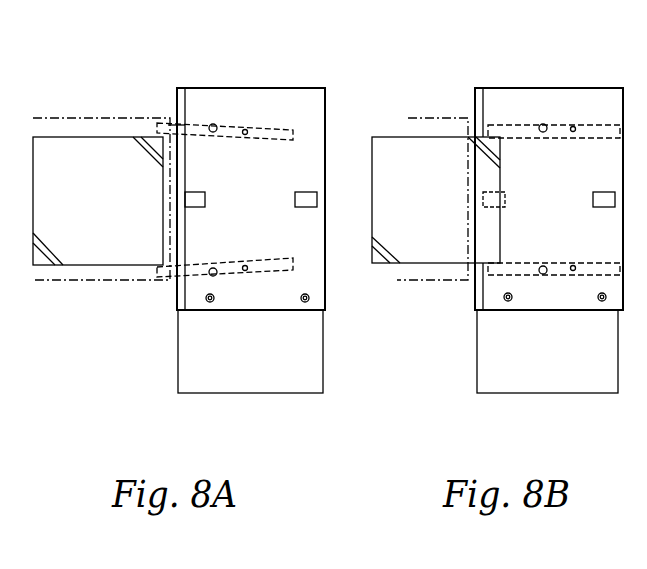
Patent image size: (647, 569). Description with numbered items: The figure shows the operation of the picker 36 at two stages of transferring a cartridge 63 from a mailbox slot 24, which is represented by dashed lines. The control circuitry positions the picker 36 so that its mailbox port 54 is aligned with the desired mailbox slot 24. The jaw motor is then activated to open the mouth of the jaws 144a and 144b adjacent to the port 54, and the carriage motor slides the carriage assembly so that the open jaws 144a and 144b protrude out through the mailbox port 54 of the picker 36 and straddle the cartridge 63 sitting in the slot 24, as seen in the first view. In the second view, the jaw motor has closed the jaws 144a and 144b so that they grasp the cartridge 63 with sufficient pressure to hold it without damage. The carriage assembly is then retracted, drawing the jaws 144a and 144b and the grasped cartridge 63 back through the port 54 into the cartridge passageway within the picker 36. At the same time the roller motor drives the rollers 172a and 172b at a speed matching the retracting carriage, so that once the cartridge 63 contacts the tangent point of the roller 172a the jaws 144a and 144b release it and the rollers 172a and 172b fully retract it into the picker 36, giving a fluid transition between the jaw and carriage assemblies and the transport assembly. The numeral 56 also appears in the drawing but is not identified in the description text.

In FIG. 8A, the mailbox slot 24 is at (118, 117).
In FIG. 8B, the mailbox slot 24 is at (462, 117).
In FIG. 8A, the picker 36 is at (200, 62).
In FIG. 8B, the picker 36 is at (525, 47).
In FIG. 8A, the mailbox port 54 is at (167, 285).
In FIG. 8A, the arrow indicating direction 56 is at (333, 140).
In FIG. 8A, the cartridge 63 is at (107, 214).
In FIG. 8B, the cartridge 63 is at (440, 209).
In FIG. 8A, the jaw 144a is at (245, 125).
In FIG. 8B, the jaw 144a is at (583, 125).
In FIG. 8A, the jaw 144b is at (255, 273).
In FIG. 8B, the jaw 144b is at (565, 273).
In FIG. 8A, the roller 172a is at (203, 197).
In FIG. 8B, the roller 172a is at (505, 197).
In FIG. 8A, the roller 172b is at (300, 195).
In FIG. 8B, the roller 172b is at (605, 202).